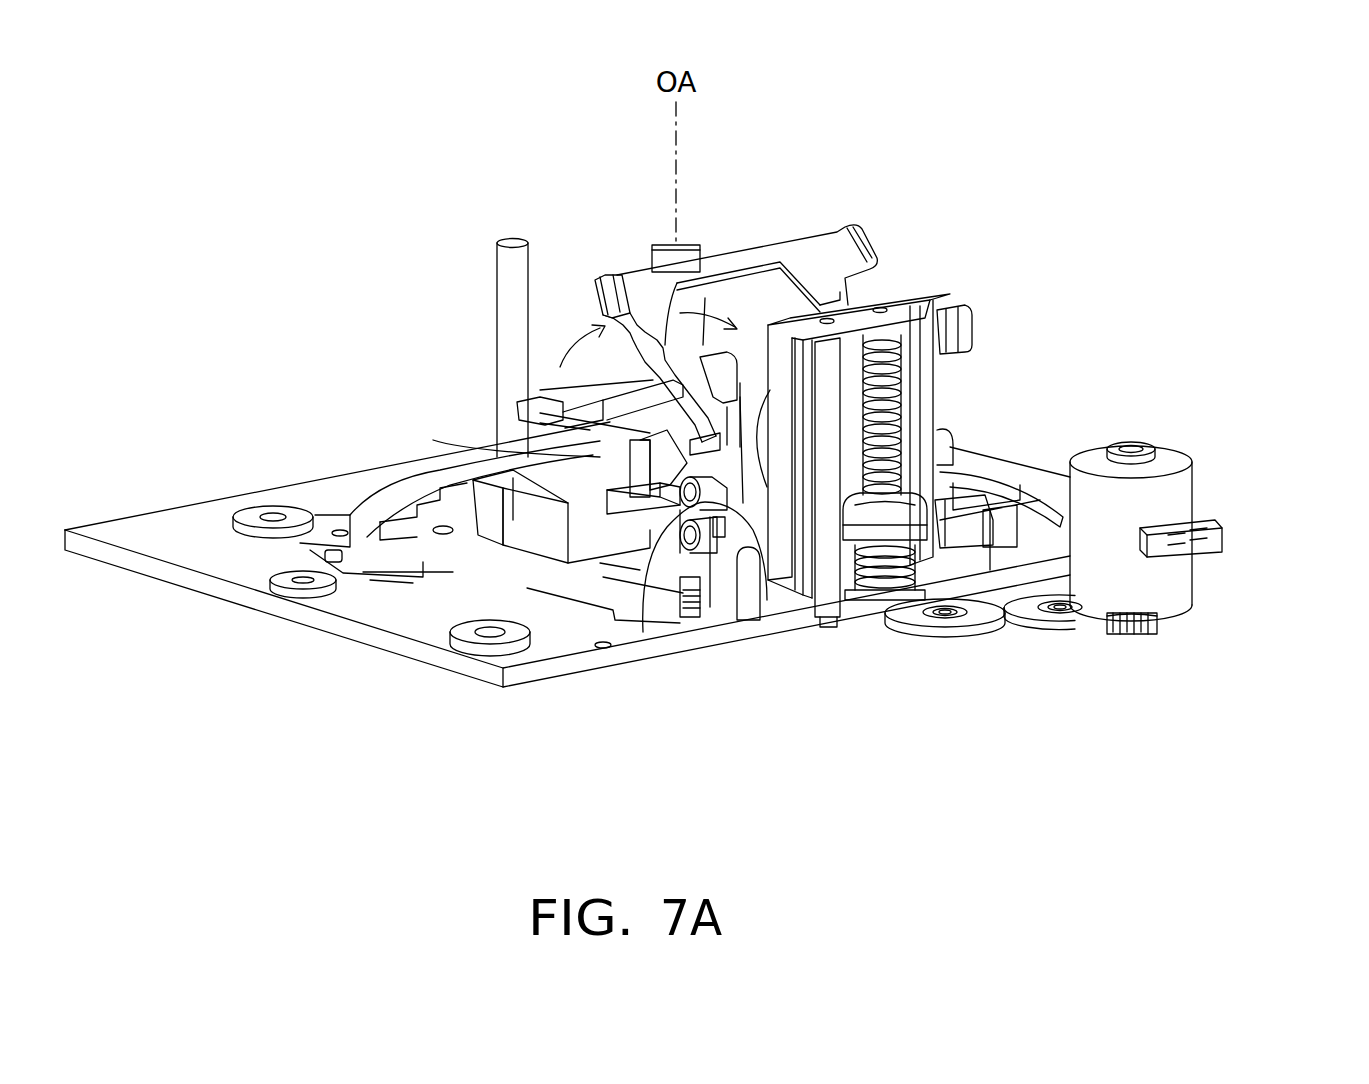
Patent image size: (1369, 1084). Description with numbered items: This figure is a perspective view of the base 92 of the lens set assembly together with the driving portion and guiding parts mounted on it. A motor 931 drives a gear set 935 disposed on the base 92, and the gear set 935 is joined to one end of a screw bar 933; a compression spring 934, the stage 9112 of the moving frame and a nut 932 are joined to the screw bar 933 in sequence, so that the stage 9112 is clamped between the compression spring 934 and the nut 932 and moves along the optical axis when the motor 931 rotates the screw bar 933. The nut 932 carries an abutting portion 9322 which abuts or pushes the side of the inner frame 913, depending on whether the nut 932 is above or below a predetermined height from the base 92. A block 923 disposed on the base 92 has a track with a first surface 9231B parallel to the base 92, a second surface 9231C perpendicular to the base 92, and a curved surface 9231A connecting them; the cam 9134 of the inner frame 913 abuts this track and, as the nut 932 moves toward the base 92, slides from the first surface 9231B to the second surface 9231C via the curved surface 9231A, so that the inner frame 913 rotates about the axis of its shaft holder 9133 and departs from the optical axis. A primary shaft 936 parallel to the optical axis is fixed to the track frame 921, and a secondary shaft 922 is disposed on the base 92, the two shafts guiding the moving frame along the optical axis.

The base 92 is at (165, 528).
The inner frame 913 is at (803, 252).
The stage 9112 is at (925, 503).
The shaft holder 9133 is at (780, 580).
The cam 9134 is at (605, 370).
The track frame 921 is at (898, 303).
The secondary shaft 922 is at (513, 258).
The block 923 is at (640, 507).
The curved surface 9231A is at (643, 632).
The first surface 9231B is at (655, 448).
The second surface 9231C is at (698, 556).
The motor 931 is at (1180, 487).
The nut 932 is at (908, 513).
The abutting portion 9322 is at (850, 495).
The screw bar 933 is at (905, 385).
The compression spring 934 is at (880, 582).
The gear set 935 is at (1027, 632).
The primary shaft 936 is at (828, 628).